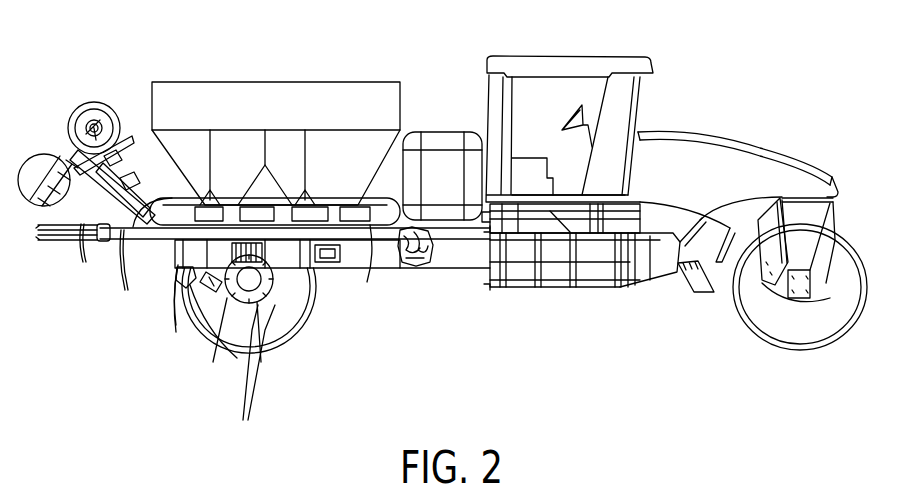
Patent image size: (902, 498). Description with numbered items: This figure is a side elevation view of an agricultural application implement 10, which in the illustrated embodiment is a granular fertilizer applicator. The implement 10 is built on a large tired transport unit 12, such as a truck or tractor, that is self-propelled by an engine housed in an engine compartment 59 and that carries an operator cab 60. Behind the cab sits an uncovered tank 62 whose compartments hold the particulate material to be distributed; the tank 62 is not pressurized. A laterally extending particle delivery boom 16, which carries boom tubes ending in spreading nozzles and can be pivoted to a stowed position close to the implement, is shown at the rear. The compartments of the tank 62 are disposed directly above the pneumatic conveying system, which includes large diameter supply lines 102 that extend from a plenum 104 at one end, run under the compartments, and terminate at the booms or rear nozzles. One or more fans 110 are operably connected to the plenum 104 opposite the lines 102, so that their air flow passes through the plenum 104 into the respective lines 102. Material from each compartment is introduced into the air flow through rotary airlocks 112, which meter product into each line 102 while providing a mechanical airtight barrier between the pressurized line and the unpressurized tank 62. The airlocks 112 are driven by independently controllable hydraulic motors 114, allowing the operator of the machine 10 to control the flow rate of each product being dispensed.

The agricultural application implement 10 is at (522, 318).
The transport unit 12 is at (664, 124).
The particle delivery boom 16 is at (427, 268).
The engine compartment 59 is at (763, 142).
The operator cab 60 is at (570, 57).
The tank 62 is at (257, 62).
The supply line 102 is at (125, 278).
The plenum 104 is at (85, 258).
The fan 110 is at (70, 130).
The rotary airlock 112 is at (236, 305).
The hydraulic motor 114 is at (270, 337).